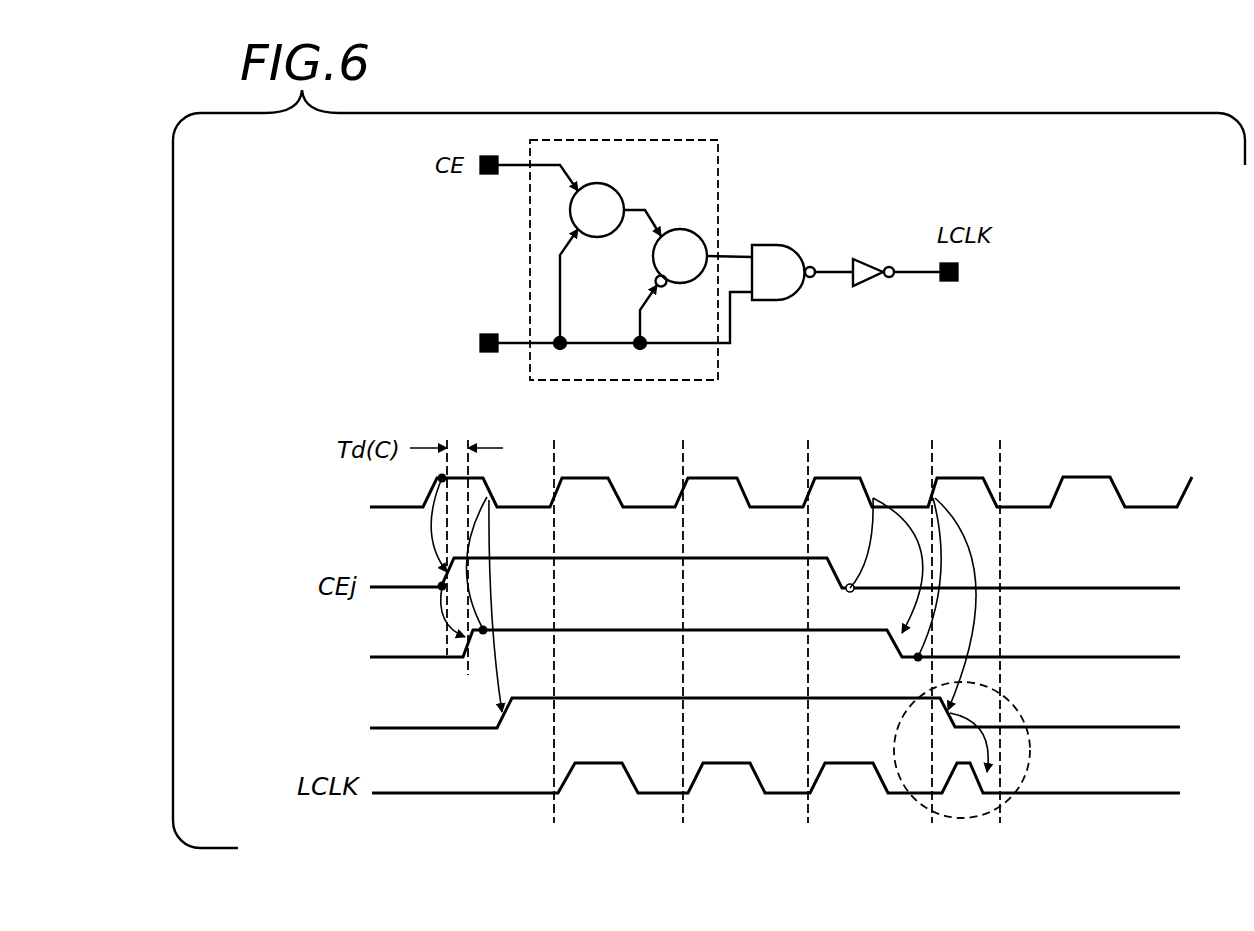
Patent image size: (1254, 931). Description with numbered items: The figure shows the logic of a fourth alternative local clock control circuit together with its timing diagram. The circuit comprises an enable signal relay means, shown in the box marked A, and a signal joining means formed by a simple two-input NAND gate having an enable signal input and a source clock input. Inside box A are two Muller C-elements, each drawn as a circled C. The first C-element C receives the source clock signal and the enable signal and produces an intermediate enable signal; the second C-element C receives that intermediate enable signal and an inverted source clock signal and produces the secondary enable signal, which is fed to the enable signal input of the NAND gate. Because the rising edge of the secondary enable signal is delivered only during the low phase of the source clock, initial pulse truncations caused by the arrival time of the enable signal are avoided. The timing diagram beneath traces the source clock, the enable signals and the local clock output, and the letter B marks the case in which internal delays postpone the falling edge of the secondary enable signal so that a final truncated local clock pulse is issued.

The enable signal relay means A is at (625, 260).
The final truncated LCLK pulse B is at (962, 750).
The C-element C is at (638, 233).